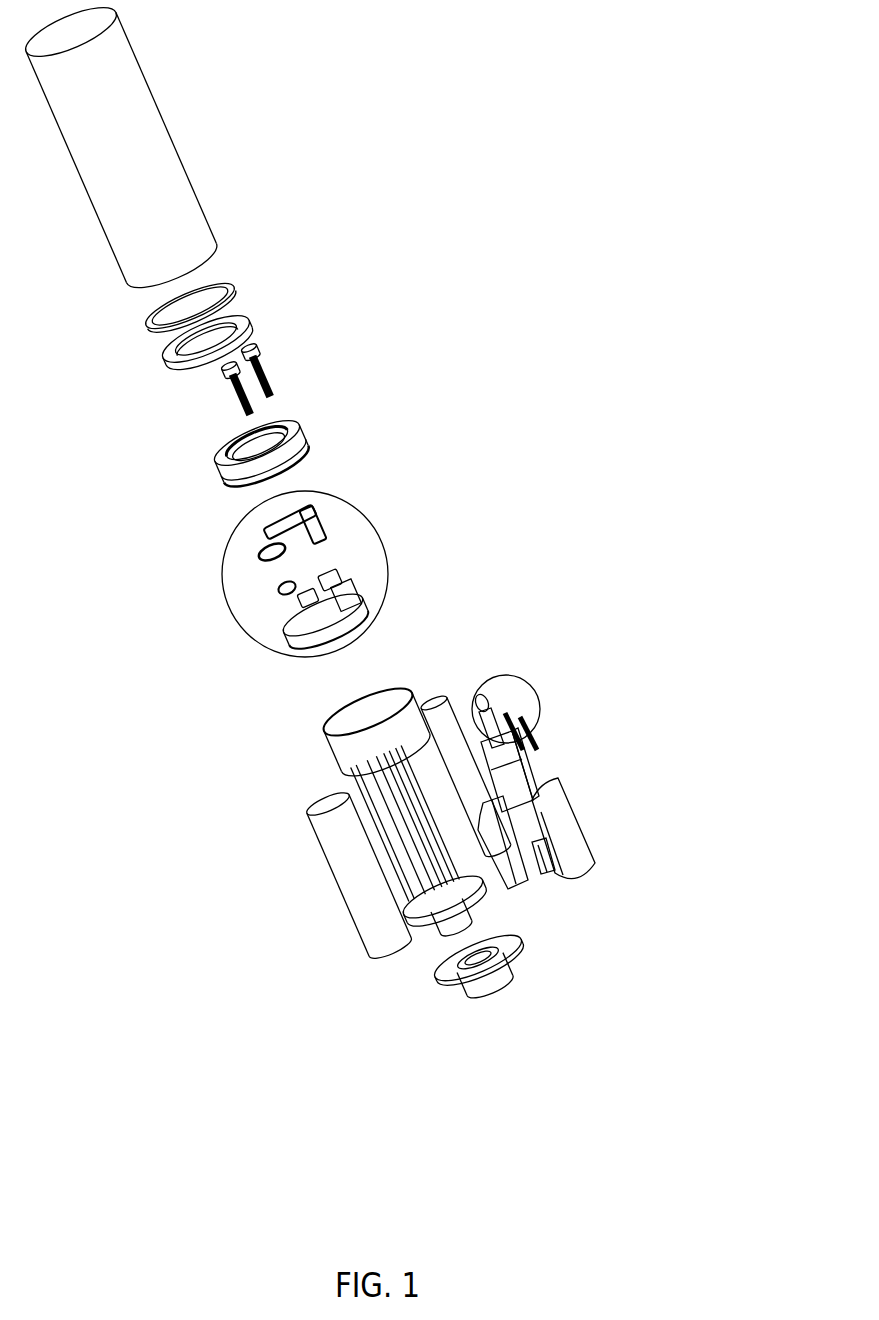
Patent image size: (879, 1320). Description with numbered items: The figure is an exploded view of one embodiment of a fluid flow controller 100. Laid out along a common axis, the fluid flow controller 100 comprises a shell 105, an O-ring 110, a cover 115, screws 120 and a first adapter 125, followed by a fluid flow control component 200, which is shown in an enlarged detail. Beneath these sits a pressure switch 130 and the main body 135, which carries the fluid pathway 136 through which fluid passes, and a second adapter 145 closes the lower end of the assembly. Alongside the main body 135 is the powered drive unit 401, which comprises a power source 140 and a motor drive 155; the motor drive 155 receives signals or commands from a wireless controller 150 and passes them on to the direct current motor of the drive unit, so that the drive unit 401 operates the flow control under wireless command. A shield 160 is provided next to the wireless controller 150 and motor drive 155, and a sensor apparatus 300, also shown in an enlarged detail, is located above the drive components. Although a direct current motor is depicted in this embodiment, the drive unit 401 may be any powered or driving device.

The fluid flow controller 100 is at (515, 300).
The shell 105 is at (181, 160).
The O-ring 110 is at (232, 283).
The cover 115 is at (245, 318).
The screws 120 is at (272, 392).
The first adapter 125 is at (305, 440).
The pressure switch 130 is at (328, 690).
The main body 135 is at (332, 736).
The fluid pathway 136 is at (447, 873).
The power source 140 is at (310, 815).
The second adapter 145 is at (437, 983).
The wireless controller 150 is at (507, 833).
The motor drive 155 is at (567, 880).
The shield 160 is at (558, 800).
The fluid flow control component 200 is at (377, 517).
The sensor apparatus 300 is at (513, 662).
The powered drive unit 401 is at (590, 784).